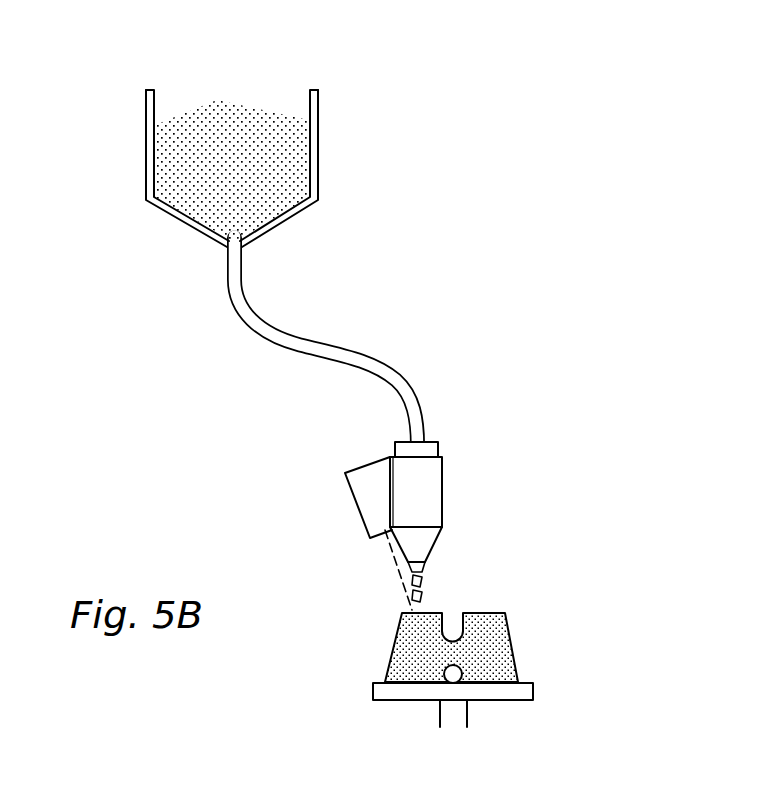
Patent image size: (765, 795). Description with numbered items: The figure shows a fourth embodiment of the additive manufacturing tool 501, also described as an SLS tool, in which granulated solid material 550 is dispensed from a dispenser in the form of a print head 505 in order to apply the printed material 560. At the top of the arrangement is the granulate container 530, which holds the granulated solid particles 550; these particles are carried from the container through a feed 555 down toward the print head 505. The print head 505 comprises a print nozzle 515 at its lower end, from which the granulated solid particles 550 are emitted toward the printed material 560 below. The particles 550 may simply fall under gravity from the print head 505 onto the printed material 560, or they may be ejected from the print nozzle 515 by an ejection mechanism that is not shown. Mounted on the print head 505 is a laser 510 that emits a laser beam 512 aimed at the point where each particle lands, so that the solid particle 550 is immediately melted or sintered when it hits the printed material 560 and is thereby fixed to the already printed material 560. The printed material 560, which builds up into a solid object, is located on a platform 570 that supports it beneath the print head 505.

The additive manufacturing tool 501 is at (532, 207).
The print head 505 is at (435, 482).
The laser 510 is at (367, 492).
The laser beam 512 is at (393, 570).
The print nozzle 515 is at (428, 566).
The granulate container 530 is at (318, 155).
The granulated solid material 550 is at (235, 118).
The feed 555 is at (389, 368).
The printed material 560 is at (493, 633).
The platform 570 is at (523, 690).